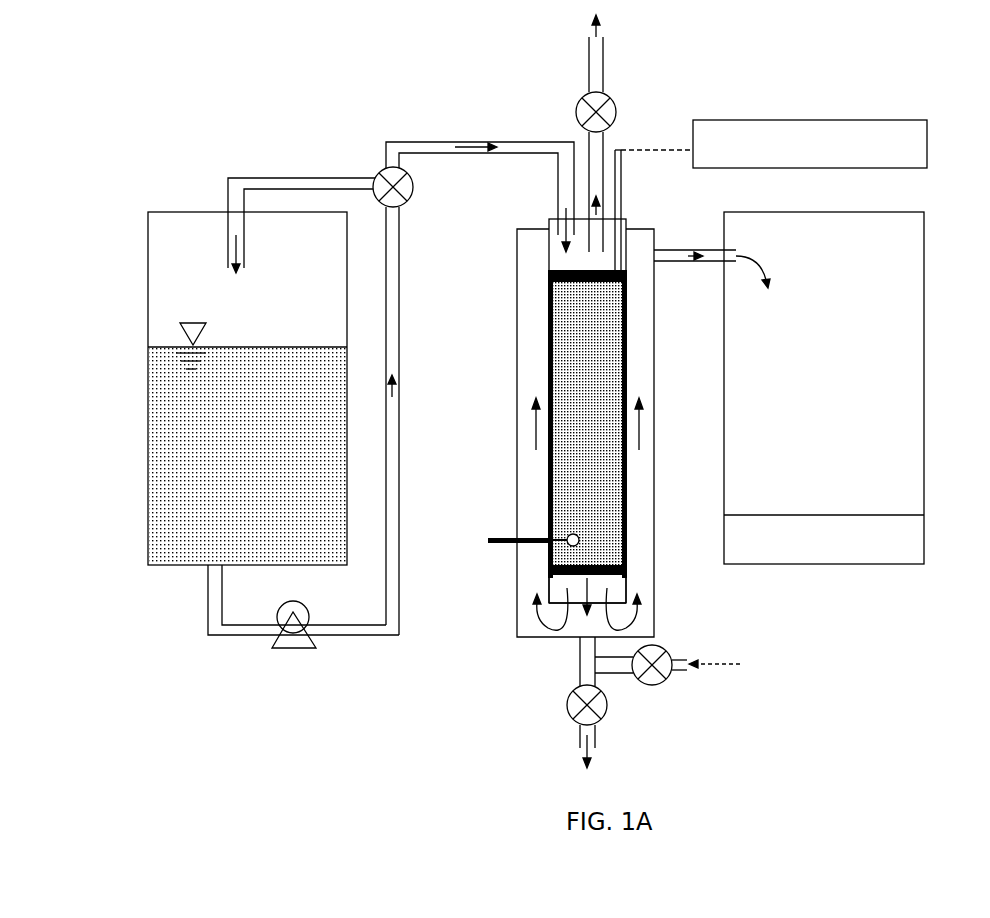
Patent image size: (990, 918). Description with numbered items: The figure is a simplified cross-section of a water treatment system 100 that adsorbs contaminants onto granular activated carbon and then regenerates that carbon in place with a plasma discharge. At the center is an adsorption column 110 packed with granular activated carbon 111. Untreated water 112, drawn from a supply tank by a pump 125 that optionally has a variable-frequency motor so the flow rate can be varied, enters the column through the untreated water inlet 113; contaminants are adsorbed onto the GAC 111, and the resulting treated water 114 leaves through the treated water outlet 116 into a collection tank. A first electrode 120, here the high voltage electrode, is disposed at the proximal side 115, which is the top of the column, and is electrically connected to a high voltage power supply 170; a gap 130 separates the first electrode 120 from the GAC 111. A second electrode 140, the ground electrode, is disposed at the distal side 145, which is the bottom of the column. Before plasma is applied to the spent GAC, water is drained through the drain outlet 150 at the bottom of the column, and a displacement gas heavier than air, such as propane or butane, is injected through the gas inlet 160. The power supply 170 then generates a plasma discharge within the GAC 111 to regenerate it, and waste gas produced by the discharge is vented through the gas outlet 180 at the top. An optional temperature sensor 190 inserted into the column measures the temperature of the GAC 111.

The water treatment system 100 is at (412, 95).
The adsorption column 110 is at (548, 470).
The granular activated carbon 111 is at (608, 429).
The untreated water 112 is at (254, 461).
The untreated water inlet 113 is at (475, 157).
The treated water 114 is at (796, 552).
The proximal side 115 is at (548, 222).
The treated water outlet 116 is at (703, 262).
The first electrode 120 is at (623, 200).
The pump 125 is at (291, 652).
The gap 130 is at (615, 258).
The second electrode 140 is at (626, 567).
The distal side 145 is at (548, 585).
The drain outlet 150 is at (580, 735).
The gas inlet 160 is at (690, 677).
The high voltage power supply 170 is at (853, 120).
The gas outlet 180 is at (588, 80).
The temperature sensor 190 is at (492, 548).